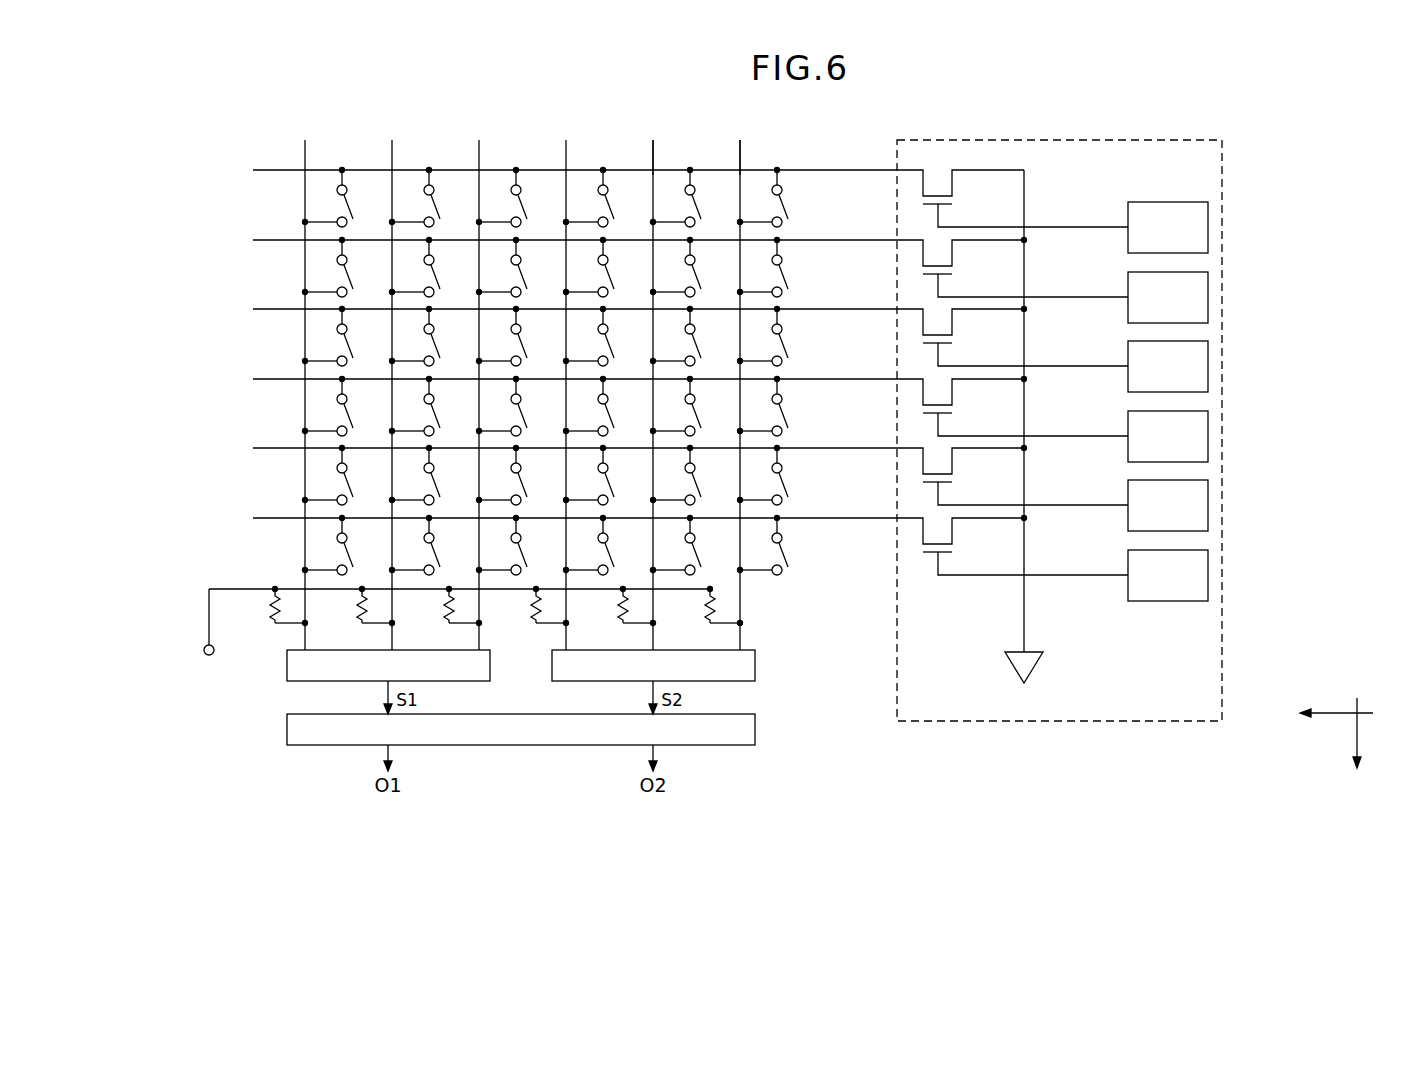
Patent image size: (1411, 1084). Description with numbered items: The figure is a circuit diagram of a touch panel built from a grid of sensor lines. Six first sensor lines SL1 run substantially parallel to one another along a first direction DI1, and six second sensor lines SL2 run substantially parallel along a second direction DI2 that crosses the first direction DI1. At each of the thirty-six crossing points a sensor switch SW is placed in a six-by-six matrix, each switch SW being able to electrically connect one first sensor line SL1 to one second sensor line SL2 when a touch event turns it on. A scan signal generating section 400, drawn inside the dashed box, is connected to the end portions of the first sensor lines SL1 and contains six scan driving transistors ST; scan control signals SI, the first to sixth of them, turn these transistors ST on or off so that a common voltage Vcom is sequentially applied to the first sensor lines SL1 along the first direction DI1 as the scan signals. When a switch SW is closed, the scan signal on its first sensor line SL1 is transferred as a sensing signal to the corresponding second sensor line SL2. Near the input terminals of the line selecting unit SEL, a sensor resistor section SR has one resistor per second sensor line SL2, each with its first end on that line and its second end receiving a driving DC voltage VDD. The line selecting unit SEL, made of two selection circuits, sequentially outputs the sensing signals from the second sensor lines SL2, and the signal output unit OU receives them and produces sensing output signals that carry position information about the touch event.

The sensor switch SW is at (436, 189).
The scan driving transistor ST is at (962, 193).
The first sensor line SL1 is at (757, 170).
The second sensor line SL2 is at (738, 152).
The sensor resistor section SR is at (723, 606).
The line selecting unit SEL is at (757, 667).
The signal output unit OU is at (757, 733).
The scan signal generating section 400 is at (1060, 721).
The scan control signal SI is at (1182, 197).
The driving DC voltage VDD is at (209, 662).
The common voltage Vcom is at (1027, 680).
The first direction DI1 is at (1357, 747).
The second direction DI2 is at (1317, 713).